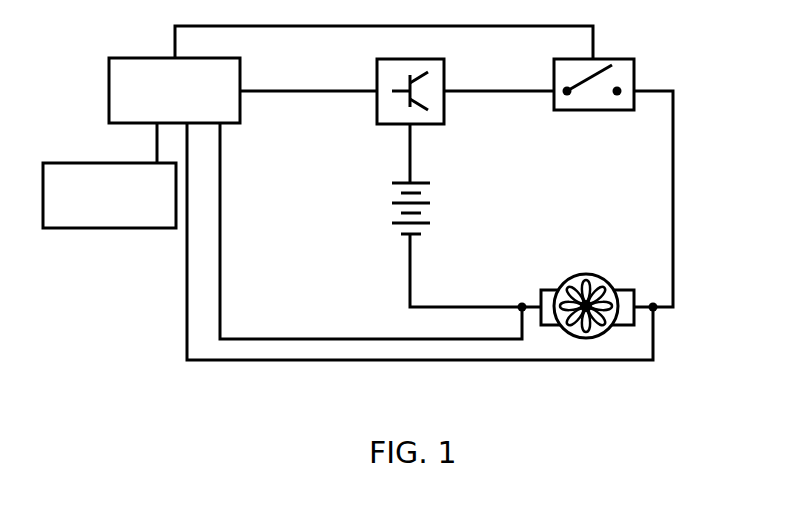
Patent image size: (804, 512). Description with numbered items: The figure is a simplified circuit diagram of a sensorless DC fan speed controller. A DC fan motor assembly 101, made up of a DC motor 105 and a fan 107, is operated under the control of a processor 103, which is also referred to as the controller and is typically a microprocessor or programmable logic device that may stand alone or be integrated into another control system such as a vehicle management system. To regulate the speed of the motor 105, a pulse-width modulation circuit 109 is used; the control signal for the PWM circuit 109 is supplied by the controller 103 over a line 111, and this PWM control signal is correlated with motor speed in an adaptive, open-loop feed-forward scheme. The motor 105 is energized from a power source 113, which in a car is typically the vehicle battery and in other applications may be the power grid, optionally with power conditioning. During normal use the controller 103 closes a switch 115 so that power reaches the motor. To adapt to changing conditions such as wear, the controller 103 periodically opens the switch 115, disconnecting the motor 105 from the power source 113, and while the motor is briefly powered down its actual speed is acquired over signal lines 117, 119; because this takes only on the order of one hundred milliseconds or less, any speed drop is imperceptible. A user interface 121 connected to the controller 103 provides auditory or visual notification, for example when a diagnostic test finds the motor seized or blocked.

The DC fan motor assembly 101 is at (613, 254).
The processor 103 is at (137, 57).
The DC motor 105 is at (588, 272).
The fan 107 is at (568, 288).
The pulse-width modulation circuit 109 is at (430, 125).
The line 111 is at (350, 90).
The power source 113 is at (371, 209).
The switch 115 is at (618, 57).
The signal line 117 is at (365, 337).
The signal line 119 is at (365, 362).
The user interface 121 is at (118, 162).